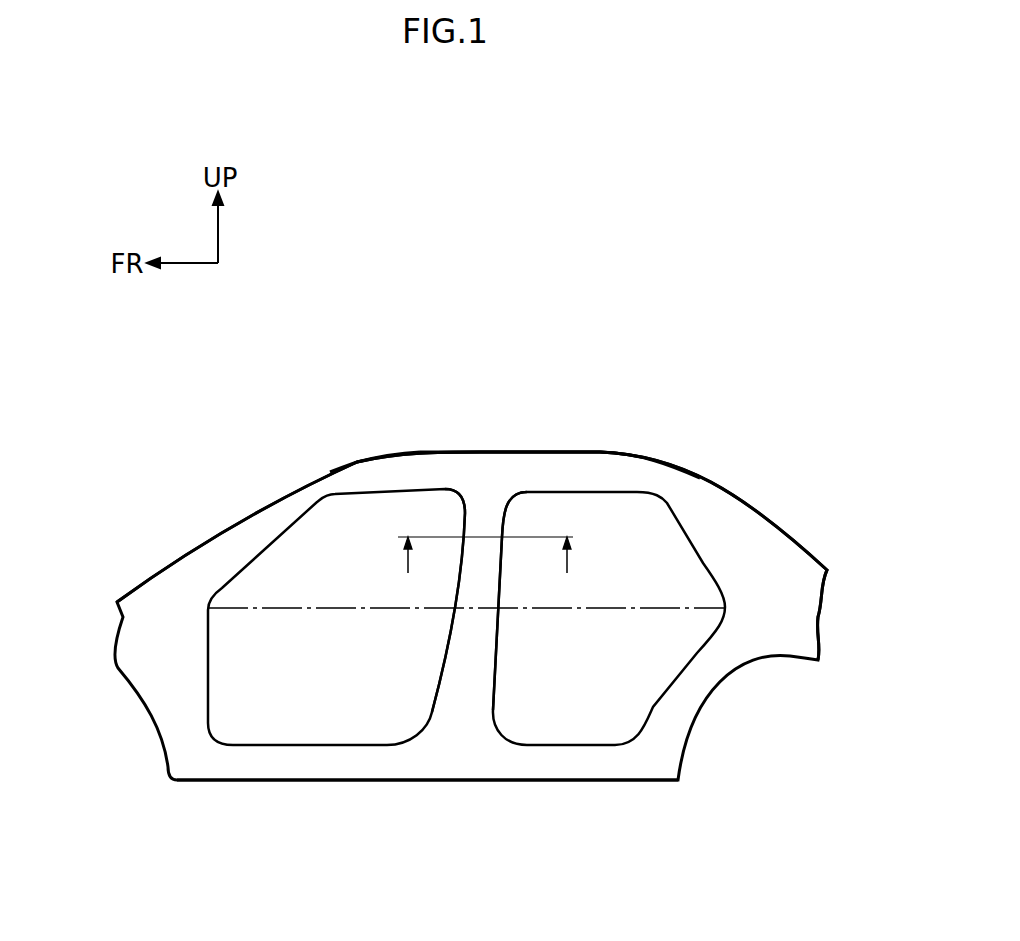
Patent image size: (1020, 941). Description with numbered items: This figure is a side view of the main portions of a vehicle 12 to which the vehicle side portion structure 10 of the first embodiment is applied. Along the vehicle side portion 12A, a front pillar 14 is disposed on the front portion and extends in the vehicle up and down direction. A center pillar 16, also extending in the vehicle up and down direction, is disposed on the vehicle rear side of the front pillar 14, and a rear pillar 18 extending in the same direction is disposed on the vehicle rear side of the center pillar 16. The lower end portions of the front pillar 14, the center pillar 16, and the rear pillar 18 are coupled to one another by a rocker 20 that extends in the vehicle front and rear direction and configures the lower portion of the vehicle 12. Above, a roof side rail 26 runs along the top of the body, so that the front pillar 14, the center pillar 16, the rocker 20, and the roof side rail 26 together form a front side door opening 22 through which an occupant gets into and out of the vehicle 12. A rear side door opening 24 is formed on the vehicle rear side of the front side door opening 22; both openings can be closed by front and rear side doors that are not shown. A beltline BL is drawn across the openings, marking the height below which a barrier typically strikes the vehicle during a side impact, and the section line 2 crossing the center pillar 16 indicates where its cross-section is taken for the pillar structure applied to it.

The vehicle side portion structure 10 is at (575, 376).
The vehicle 12 is at (407, 455).
The vehicle side portion 12A is at (362, 463).
The front pillar 14 is at (228, 527).
The center pillar 16 is at (447, 657).
The rear pillar 18 is at (768, 513).
The rocker 20 is at (436, 780).
The front side door opening 22 is at (326, 744).
The rear side door opening 24 is at (590, 744).
The roof side rail 26 is at (482, 453).
The beltline BL is at (675, 610).
The section line 2- 2 is at (488, 560).